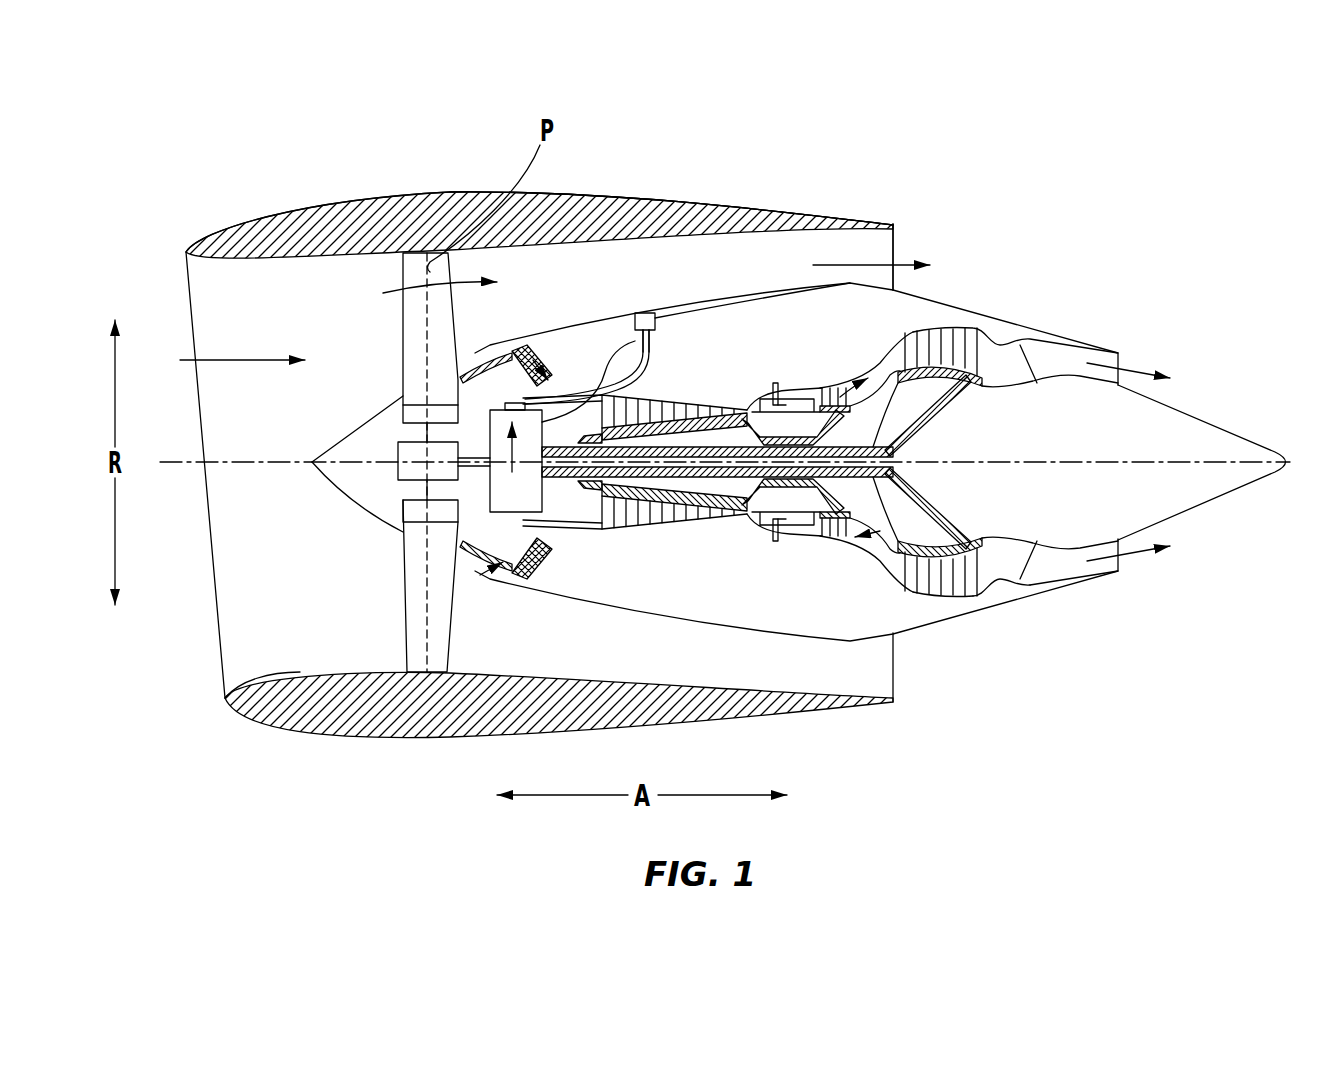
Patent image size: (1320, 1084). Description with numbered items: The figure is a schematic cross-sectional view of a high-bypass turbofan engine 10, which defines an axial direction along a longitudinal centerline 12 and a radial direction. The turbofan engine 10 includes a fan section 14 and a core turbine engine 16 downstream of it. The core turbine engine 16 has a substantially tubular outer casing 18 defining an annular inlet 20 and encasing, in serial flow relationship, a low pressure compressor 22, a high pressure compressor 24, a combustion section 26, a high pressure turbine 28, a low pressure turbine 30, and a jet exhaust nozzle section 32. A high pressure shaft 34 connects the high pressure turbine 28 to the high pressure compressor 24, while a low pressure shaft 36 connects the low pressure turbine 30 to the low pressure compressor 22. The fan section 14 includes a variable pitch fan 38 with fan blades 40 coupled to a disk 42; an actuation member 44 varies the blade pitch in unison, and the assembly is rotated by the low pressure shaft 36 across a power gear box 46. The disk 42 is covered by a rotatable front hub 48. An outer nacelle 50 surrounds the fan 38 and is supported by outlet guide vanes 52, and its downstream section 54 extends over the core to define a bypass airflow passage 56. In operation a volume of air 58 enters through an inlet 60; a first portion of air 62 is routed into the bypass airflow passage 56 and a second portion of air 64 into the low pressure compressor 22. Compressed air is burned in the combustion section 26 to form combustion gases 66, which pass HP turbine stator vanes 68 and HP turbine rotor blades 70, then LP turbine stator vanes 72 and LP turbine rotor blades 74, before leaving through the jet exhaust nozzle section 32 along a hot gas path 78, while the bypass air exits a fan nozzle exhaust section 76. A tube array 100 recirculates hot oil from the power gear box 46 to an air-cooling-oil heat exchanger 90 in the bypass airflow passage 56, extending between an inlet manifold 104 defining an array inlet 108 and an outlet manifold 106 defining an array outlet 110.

The turbofan engine 10 is at (1038, 205).
The longitudinal centerline 12 is at (1060, 462).
The fan section 14 is at (358, 277).
The core turbine engine 16 is at (712, 333).
The outer casing 18 is at (747, 627).
The annular inlet 20 is at (480, 575).
The low pressure compressor 22 is at (530, 532).
The high pressure compressor 24 is at (623, 516).
The combustion section 26 is at (795, 526).
The high pressure turbine 28 is at (933, 534).
The low pressure turbine 30 is at (979, 598).
The jet exhaust nozzle section 32 is at (1036, 577).
The high pressure shaft 34 is at (795, 438).
The low pressure shaft 36 is at (940, 418).
The variable pitch fan 38 is at (367, 513).
The fan blades 40 is at (400, 610).
The disk 42 is at (417, 417).
The actuation member 44 is at (400, 446).
The power gear box 46 is at (638, 352).
The front hub 48 is at (323, 480).
The outer nacelle 50 is at (450, 737).
The outlet guide vanes 52 is at (593, 252).
The downstream section 54 is at (843, 216).
The bypass airflow passage 56 is at (742, 282).
The volume of air 58 is at (240, 360).
The inlet 60 is at (220, 677).
The first portion of air 62 is at (413, 307).
The second portion of air 64 is at (485, 340).
The combustion gases 66 is at (838, 382).
The HP turbine stator vanes 68 is at (810, 536).
The HP turbine rotor blades 70 is at (830, 508).
The LP turbine stator vanes 72 is at (898, 576).
The LP turbine rotor blades 74 is at (913, 578).
The fan nozzle exhaust section 76 is at (883, 248).
The hot gas path 78 is at (880, 367).
The air-cooling-oil heat exchanger 90 is at (652, 306).
The tube array 100 is at (632, 343).
The inlet manifold 104 is at (507, 403).
The outlet manifold 106 is at (660, 325).
The array inlet 108 is at (516, 461).
The array outlet 110 is at (664, 298).